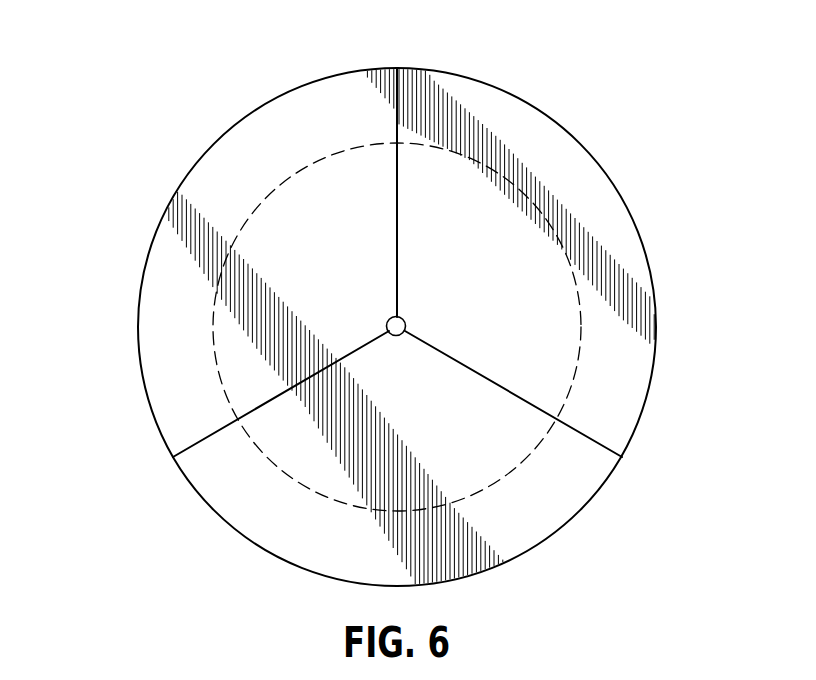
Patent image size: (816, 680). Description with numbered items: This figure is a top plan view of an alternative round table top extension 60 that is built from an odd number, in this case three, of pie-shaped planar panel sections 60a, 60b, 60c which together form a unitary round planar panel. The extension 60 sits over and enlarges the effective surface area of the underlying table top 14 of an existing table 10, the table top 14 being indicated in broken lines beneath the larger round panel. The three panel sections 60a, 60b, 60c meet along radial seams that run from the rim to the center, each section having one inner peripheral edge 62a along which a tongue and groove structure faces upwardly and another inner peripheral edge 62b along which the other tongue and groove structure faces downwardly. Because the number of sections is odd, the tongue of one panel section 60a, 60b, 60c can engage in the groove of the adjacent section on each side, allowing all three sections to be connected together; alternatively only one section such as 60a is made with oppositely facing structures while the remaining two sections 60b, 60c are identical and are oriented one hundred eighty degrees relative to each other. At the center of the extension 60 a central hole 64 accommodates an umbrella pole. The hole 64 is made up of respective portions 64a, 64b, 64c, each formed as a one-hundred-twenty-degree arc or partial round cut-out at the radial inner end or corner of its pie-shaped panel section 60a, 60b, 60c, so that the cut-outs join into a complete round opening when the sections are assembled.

The table 10 is at (250, 204).
The table top 14 is at (581, 302).
The round table top extension 60 is at (569, 127).
The planar panel section 60a is at (290, 156).
The planar panel section 60b is at (594, 198).
The planar panel section 60c is at (338, 555).
The inner peripheral edge 62a is at (399, 121).
The inner peripheral edge 62b is at (397, 173).
The central hole 64 is at (414, 327).
The hole portion 64a is at (394, 317).
The hole portion 64b is at (405, 318).
The hole portion 64c is at (396, 336).